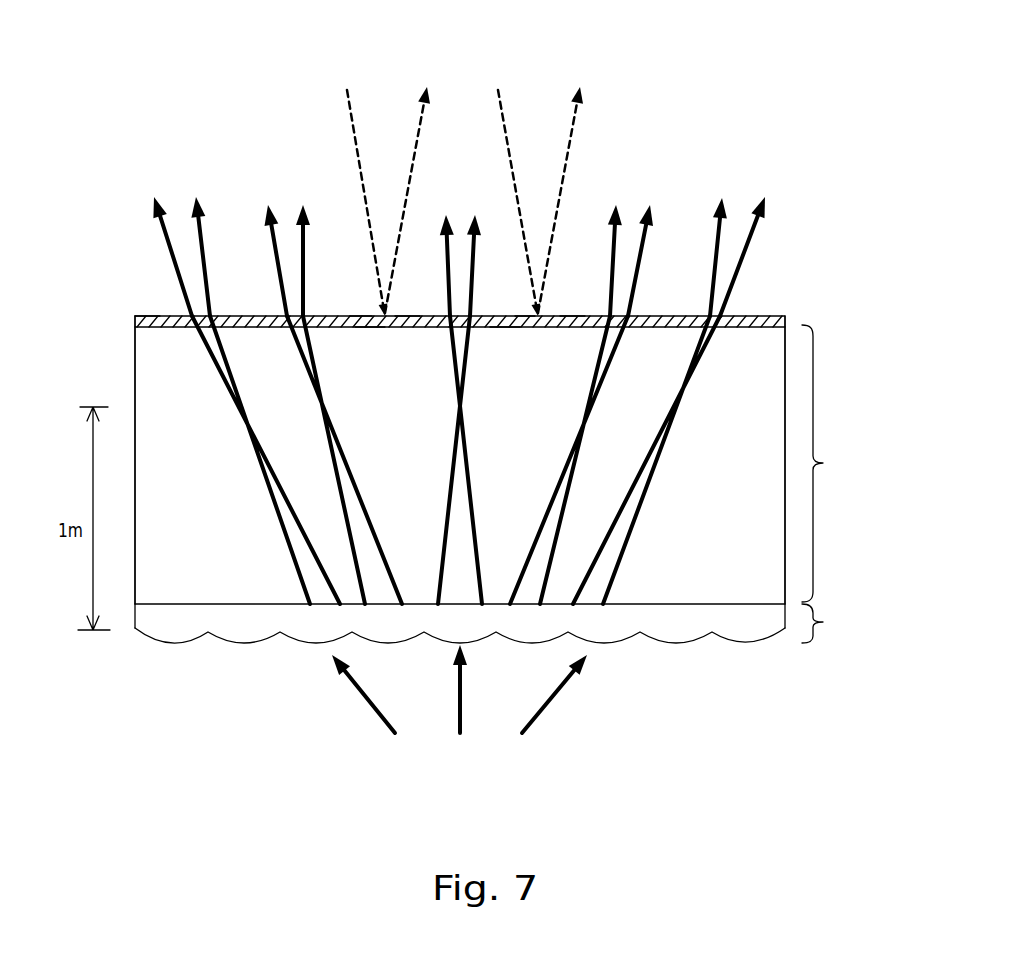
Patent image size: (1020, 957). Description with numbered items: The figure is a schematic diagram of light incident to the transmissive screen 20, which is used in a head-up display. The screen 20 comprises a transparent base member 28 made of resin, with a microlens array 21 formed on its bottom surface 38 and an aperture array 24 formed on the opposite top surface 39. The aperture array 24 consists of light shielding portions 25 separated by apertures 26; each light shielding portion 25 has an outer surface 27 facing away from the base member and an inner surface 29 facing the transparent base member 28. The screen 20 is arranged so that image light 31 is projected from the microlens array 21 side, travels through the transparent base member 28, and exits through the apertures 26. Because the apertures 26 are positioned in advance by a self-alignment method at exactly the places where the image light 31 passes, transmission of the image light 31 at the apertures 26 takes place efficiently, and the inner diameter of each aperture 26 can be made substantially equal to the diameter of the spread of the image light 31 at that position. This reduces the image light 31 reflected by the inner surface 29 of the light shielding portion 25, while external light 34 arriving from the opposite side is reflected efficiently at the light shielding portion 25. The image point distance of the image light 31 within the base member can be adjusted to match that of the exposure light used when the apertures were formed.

The transmissive screen 20 is at (150, 126).
The microlens array 21 is at (497, 623).
The aperture array 24 is at (768, 317).
The light shielding portion 25 is at (407, 313).
The aperture 26 is at (204, 316).
The outer surface 27 is at (360, 316).
The transparent base member 28 is at (497, 464).
The inner surface 29 is at (370, 327).
The image light 31 is at (205, 252).
The external light 34 is at (355, 136).
The bottom surface 38 is at (175, 604).
The top surface 39 is at (140, 316).